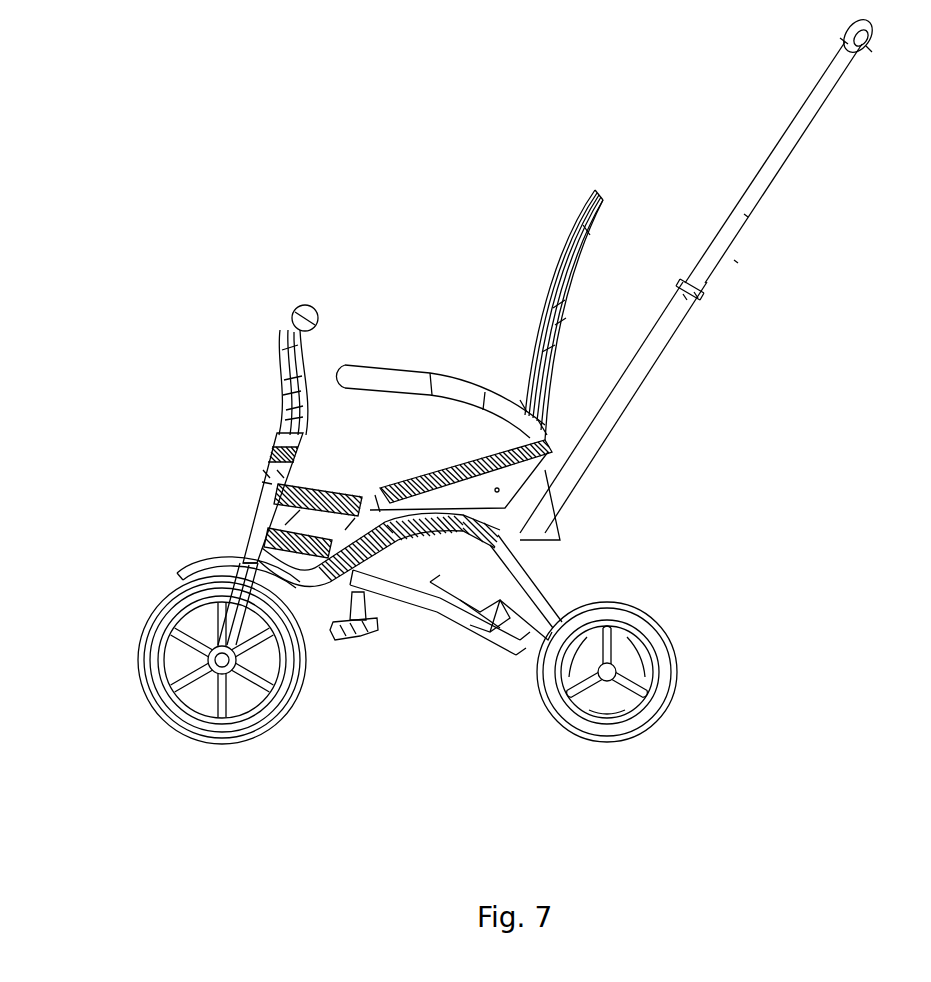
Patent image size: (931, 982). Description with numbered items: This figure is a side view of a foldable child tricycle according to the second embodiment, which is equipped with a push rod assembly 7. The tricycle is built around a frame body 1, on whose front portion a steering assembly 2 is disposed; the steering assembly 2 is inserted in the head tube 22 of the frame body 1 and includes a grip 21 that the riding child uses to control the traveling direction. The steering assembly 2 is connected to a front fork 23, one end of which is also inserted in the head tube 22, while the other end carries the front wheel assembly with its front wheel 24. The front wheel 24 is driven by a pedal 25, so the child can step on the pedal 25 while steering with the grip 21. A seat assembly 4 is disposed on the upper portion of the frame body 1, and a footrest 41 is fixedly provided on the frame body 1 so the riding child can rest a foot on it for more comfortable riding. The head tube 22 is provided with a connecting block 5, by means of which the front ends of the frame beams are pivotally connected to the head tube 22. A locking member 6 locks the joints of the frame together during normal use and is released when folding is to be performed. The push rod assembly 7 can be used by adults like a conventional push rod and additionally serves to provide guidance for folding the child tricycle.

The frame body 1 is at (417, 608).
The steering assembly 2 is at (217, 408).
The grip 21 is at (282, 335).
The head tube 22 is at (260, 520).
The front fork 23 is at (175, 572).
The front wheel 24 is at (175, 646).
The pedal 25 is at (138, 672).
The seat assembly 4 is at (535, 330).
The footrest 41 is at (355, 648).
The connecting block 5 is at (318, 490).
The locking member 6 is at (503, 645).
The push rod assembly 7 is at (745, 170).